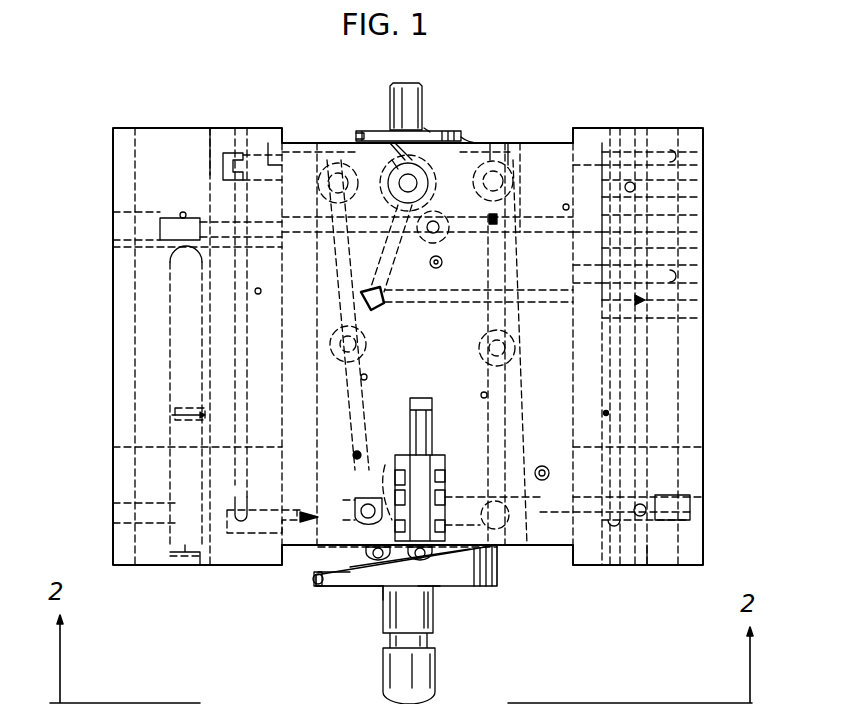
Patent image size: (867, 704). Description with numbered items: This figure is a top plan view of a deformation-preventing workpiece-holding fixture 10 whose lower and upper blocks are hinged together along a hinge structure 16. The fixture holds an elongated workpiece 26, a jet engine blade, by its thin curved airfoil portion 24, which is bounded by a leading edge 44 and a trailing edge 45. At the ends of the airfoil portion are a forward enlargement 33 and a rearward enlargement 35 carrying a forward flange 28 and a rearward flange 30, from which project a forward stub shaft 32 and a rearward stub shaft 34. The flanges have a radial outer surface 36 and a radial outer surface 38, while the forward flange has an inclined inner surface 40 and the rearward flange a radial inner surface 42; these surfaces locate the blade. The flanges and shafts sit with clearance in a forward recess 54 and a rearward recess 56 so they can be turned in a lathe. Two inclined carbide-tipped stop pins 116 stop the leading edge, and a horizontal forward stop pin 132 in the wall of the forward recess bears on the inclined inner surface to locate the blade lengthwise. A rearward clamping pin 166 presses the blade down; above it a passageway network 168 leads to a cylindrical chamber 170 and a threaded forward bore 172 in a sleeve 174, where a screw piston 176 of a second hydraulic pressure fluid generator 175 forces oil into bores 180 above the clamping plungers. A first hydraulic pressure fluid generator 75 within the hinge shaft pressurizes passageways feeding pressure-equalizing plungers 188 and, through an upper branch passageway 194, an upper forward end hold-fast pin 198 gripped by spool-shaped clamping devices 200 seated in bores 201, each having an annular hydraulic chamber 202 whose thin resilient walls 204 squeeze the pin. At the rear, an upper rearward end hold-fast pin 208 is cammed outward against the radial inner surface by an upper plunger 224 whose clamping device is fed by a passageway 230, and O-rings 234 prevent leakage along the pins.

The deformation-preventing workpiece-holding fixture 10 is at (108, 128).
The hinge structure 16 is at (678, 350).
The airfoil portion 24 is at (478, 273).
The workpiece 26 is at (500, 592).
The forward flange 28 is at (336, 588).
The rearward flange 30 is at (428, 133).
The forward stub shaft 32 is at (436, 625).
The forward enlargement or head 33 is at (440, 589).
The rearward stub shaft 34 is at (388, 92).
The rearward enlargement or head 35 is at (424, 125).
The radial outer surface of forward flange 36 is at (362, 592).
The radial outer surface of rearward flange 38 is at (356, 131).
The inclined inner surface 40 is at (312, 580).
The radial inner surface 42 is at (460, 140).
The leading edge 44 is at (316, 415).
The trailing edge 45 is at (525, 393).
The forward recess 54 is at (556, 566).
The rearward recess 56 is at (553, 143).
The first hydraulic pressure fluid generator 75 is at (659, 568).
The stop pins 116 is at (296, 133).
The forward stop pin 132 is at (366, 552).
The rearward clamping pin 166 is at (443, 262).
The passageway network 168 is at (172, 212).
The cylindrical chamber 170 is at (170, 272).
The threaded forward bore 172 is at (175, 410).
The sleeve or cylinder 174 is at (113, 503).
The second hydraulic pressure fluid generator 175 is at (188, 566).
The screw piston 176 is at (113, 525).
The bores 180 is at (440, 215).
The pressure-equalizing plungers 188 is at (318, 185).
The upper branch passageway 194 is at (452, 493).
The upper forward end hold-fast pin 198 is at (411, 565).
The spool-shaped clamping devices 200 is at (440, 452).
The bores 201 is at (378, 546).
The annular hydraulic chamber 202 is at (405, 455).
The thin resilient walls 204 is at (446, 524).
The upper rearward end hold-fast pin 208 is at (392, 135).
The upper plunger 224 is at (420, 180).
The passageway 230 is at (430, 262).
The O-rings 234 is at (455, 470).